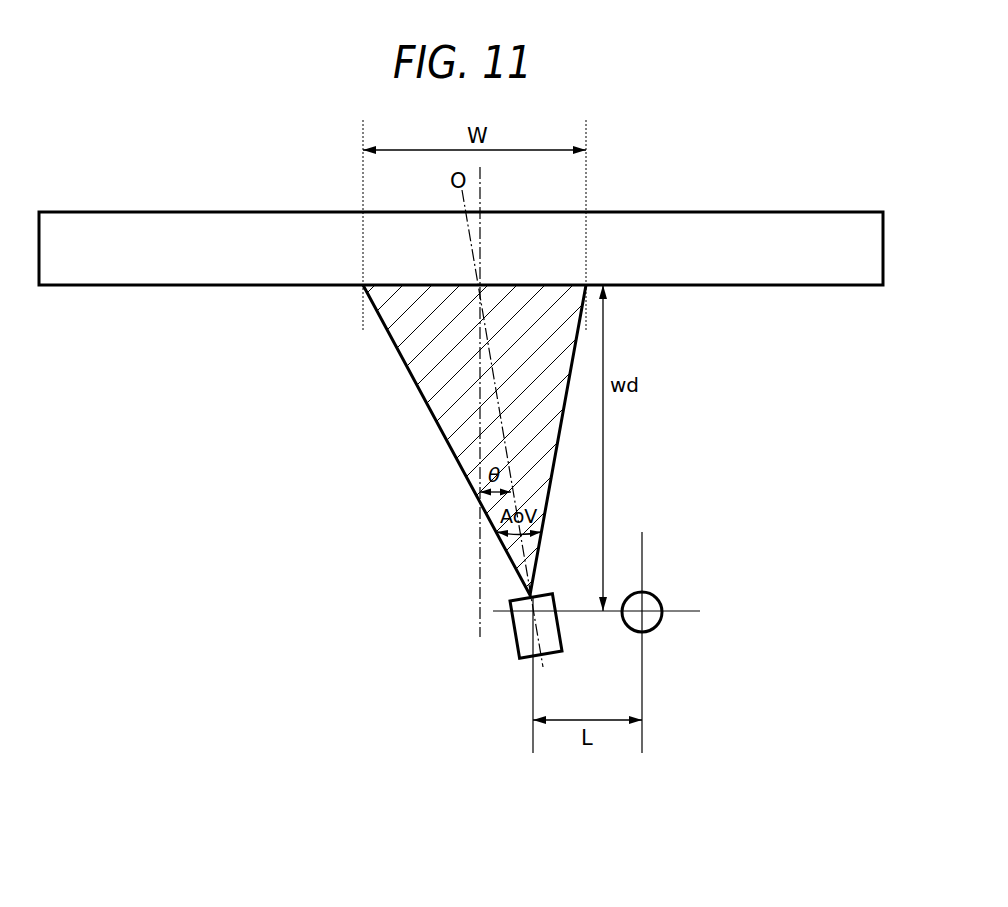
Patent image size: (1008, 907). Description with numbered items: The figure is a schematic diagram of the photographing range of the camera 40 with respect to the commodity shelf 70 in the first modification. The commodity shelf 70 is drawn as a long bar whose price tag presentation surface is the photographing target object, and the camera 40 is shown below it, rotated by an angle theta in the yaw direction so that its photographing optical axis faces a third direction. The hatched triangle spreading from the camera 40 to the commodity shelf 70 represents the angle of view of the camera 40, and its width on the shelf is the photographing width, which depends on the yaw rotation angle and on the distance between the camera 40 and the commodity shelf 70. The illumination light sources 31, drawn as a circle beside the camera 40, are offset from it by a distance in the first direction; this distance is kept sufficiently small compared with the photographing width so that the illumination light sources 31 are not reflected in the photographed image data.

The commodity shelf 70 is at (817, 211).
The camera 40 is at (519, 655).
The illumination light sources 31 is at (656, 626).